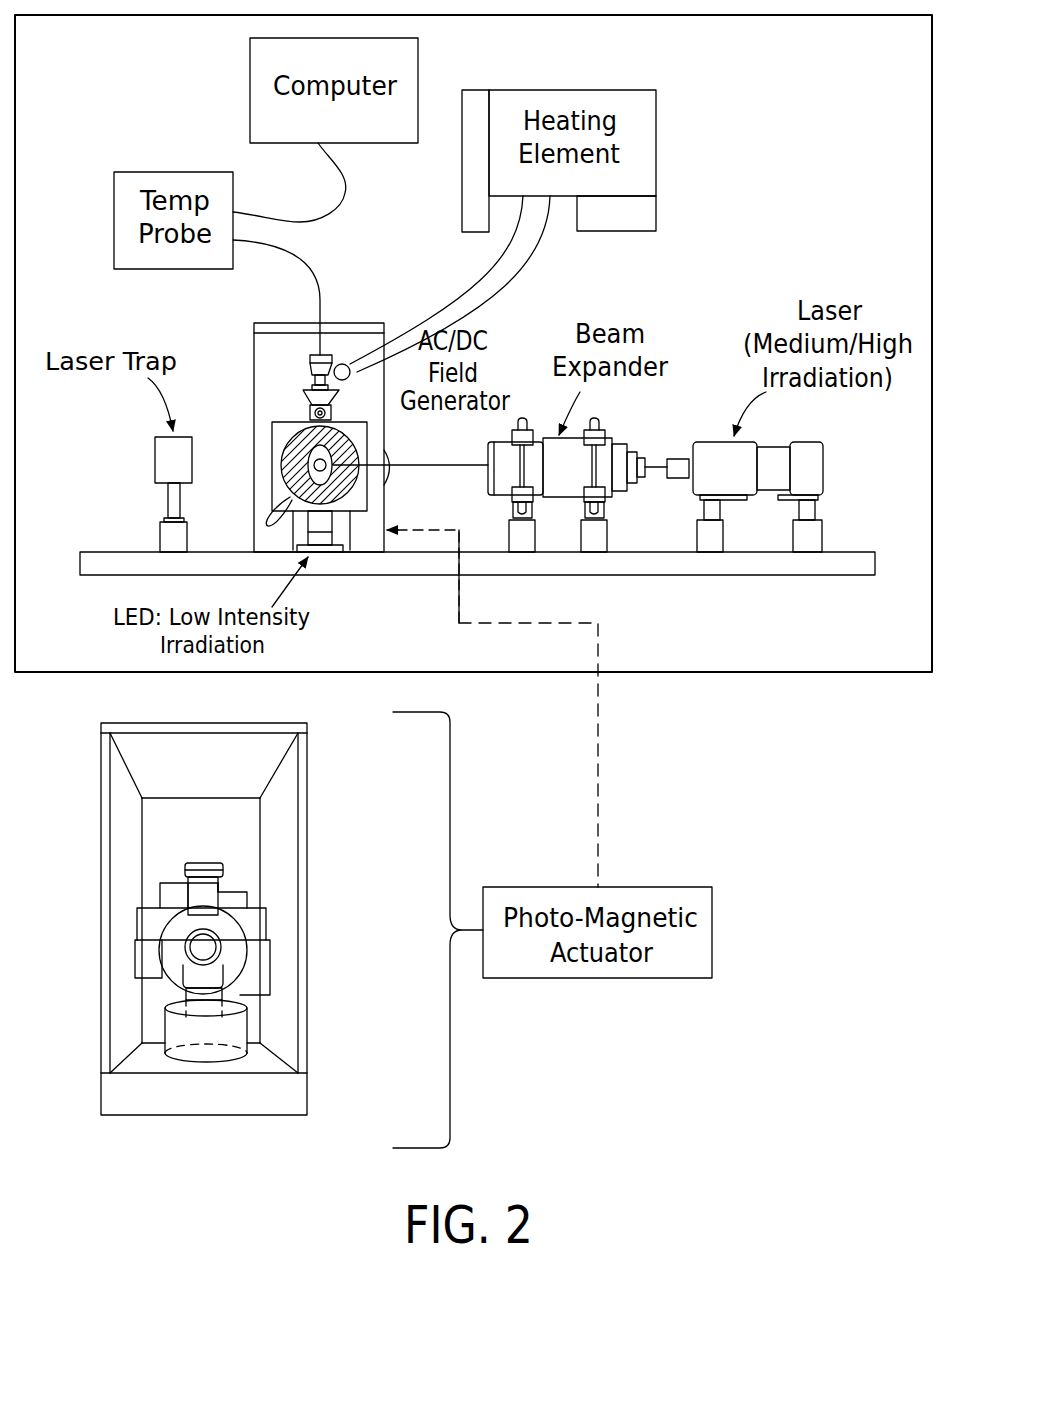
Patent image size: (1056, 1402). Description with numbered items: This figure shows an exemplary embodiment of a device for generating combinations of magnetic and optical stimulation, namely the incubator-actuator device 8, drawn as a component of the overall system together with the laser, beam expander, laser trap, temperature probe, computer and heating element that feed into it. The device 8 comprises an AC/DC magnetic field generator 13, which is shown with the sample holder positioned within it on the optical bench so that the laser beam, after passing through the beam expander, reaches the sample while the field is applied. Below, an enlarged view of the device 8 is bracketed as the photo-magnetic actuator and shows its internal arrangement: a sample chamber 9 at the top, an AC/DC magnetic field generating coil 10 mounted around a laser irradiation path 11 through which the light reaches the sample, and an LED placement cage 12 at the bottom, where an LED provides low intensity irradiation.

The incubator-actuator device 8 is at (336, 797).
The sample chamber 9 is at (228, 872).
The AC/DC magnetic field generating coil 10 is at (255, 927).
The laser irradiation path 11 is at (230, 955).
The LED placement cage 12 is at (240, 1034).
The AC/DC magnetic field generator 13 is at (354, 445).